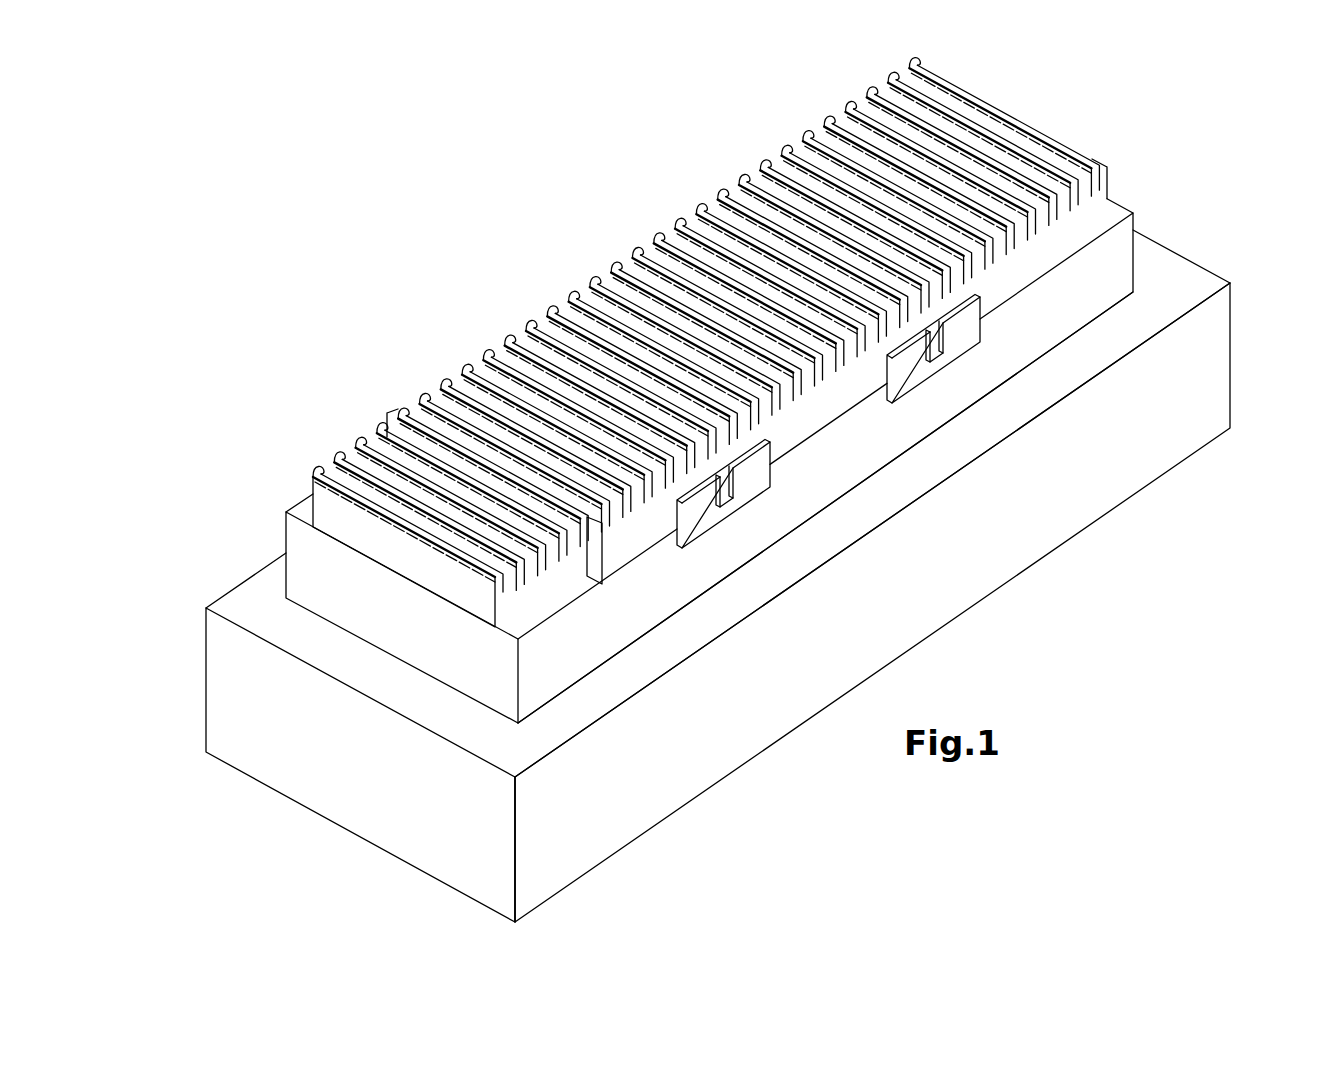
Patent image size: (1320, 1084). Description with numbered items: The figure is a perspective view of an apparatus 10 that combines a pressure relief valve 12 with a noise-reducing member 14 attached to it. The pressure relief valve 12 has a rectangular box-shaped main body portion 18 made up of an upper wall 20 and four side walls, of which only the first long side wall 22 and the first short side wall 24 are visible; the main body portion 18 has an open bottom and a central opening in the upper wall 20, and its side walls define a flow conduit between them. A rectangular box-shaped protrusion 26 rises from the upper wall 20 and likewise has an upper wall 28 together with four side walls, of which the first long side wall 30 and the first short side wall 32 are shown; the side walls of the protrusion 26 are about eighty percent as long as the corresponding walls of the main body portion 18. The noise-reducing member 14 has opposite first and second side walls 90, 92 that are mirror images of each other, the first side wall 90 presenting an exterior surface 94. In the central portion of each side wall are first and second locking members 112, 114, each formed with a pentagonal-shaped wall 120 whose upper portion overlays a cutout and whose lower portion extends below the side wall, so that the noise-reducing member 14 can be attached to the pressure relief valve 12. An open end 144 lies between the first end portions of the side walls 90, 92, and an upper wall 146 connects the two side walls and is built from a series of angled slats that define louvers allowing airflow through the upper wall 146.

The apparatus 10 is at (355, 283).
The pressure relief valve 12 is at (687, 576).
The noise-reducing member 14 is at (690, 361).
The main body portion 18 is at (700, 756).
The upper wall 20 is at (478, 733).
The first long side wall 22 is at (1040, 520).
The first short side wall 24 is at (355, 783).
The protrusion 26 is at (651, 461).
The upper wall 28 is at (566, 596).
The first long side wall 30 is at (843, 462).
The first short side wall 32 is at (346, 584).
The first side wall 90 is at (1112, 178).
The second side wall 92 is at (305, 510).
The exterior surface 94 is at (1012, 285).
The first locking member 112 is at (758, 495).
The second locking member 114 is at (965, 347).
The pentagonal-shaped wall 120 is at (893, 485).
The open end 144 is at (430, 582).
The upper wall 146 is at (715, 182).